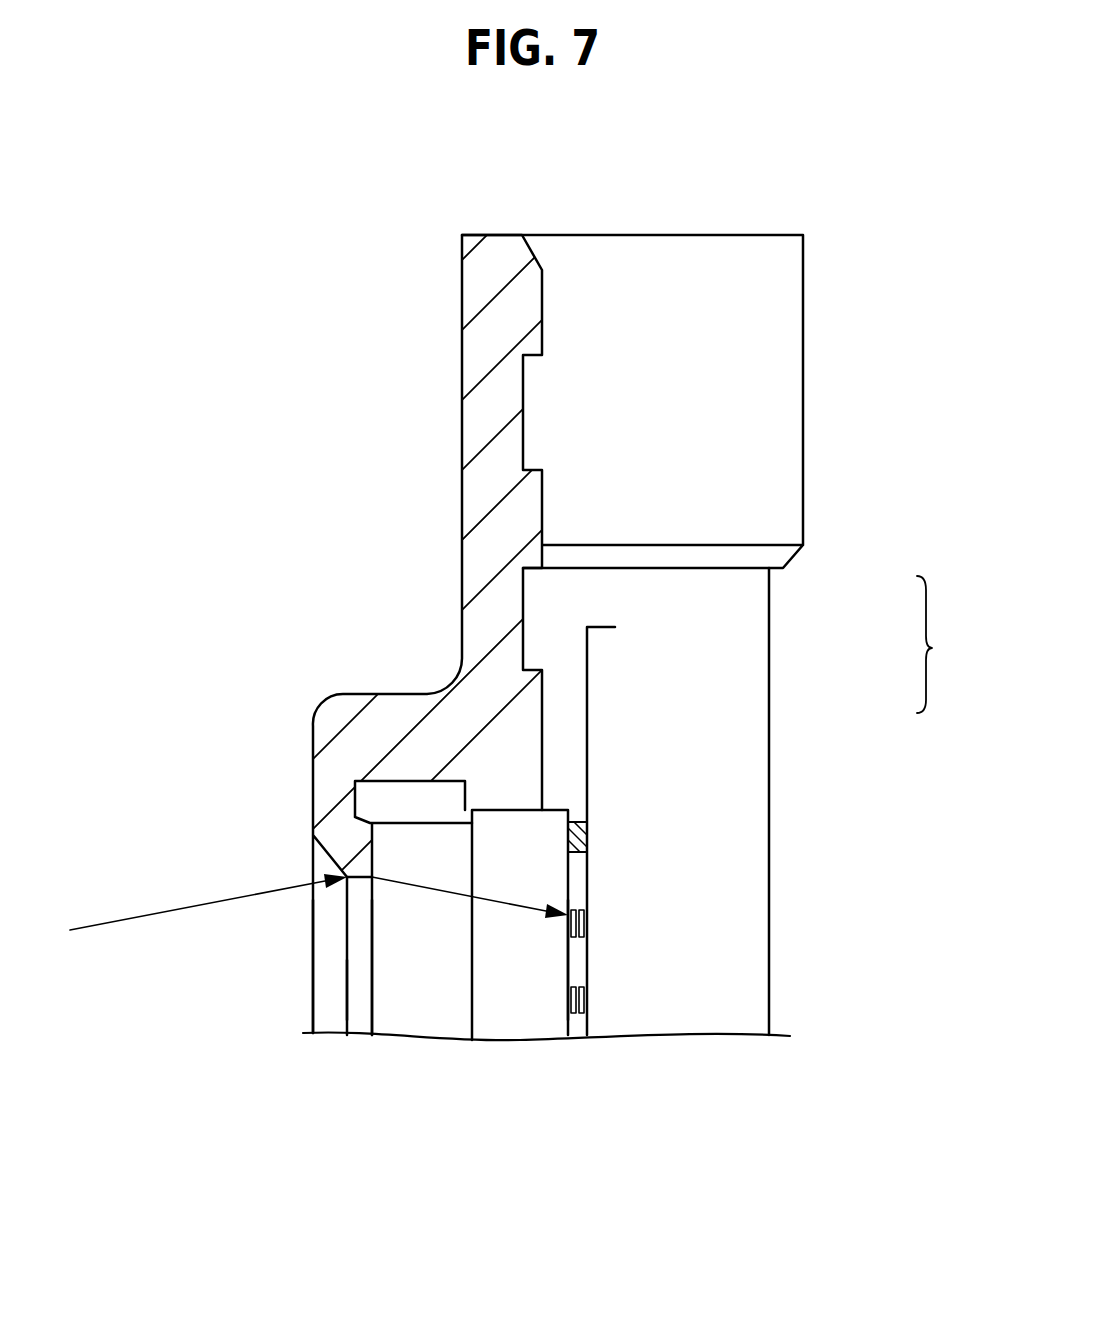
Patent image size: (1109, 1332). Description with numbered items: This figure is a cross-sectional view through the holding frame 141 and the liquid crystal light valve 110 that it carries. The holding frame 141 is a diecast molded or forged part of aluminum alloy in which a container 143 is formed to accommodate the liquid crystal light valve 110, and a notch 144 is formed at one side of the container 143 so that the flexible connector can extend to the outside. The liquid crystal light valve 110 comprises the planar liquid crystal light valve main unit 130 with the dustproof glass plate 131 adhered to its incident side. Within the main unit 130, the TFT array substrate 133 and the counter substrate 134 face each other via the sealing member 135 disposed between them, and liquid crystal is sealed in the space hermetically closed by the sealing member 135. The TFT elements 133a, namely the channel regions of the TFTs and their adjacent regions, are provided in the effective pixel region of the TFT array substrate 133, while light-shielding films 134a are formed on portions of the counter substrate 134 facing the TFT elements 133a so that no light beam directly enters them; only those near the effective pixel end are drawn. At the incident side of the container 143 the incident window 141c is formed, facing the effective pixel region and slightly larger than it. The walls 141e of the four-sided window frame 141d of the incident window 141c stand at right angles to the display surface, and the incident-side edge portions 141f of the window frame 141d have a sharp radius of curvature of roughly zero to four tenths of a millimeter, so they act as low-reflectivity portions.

The liquid crystal light valve 110 is at (522, 1076).
The liquid crystal light valve main unit 130 is at (950, 644).
The dustproof glass plate 131 is at (415, 840).
The TFT array substrate 133 is at (613, 627).
The TFT elements 133a is at (585, 923).
The counter substrate 134 is at (503, 808).
The light-shielding films 134a is at (570, 933).
The sealing member 135 is at (587, 843).
The holding frame 141 is at (723, 213).
The incident window 141c is at (360, 1020).
The window frame 141d is at (330, 935).
The walls 141e is at (368, 960).
The incident-side edge portions 141f is at (347, 988).
The container 143 is at (717, 913).
The notch 144 is at (765, 407).